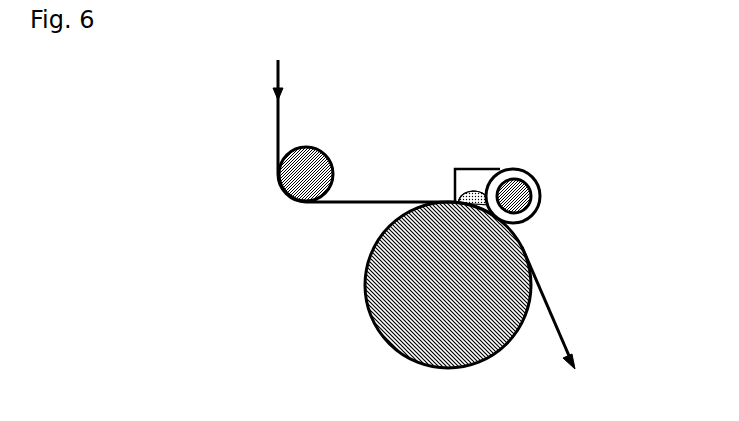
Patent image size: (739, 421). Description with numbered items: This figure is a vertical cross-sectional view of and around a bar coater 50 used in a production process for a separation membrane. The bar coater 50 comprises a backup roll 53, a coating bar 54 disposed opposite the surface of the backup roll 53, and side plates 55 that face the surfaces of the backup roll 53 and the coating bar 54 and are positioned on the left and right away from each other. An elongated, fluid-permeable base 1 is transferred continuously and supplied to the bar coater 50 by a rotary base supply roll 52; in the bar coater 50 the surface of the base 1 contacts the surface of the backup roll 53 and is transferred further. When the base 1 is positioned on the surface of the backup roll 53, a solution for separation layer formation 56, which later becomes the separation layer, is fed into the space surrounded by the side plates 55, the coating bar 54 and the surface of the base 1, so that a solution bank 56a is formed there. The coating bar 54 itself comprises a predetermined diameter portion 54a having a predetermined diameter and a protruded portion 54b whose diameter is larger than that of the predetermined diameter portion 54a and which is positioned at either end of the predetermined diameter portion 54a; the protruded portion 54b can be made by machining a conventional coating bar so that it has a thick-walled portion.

The base 1 is at (277, 127).
The bar coater 50 is at (533, 145).
The base supply roll 52 is at (308, 147).
The backup roll 53 is at (365, 282).
The coating bar 54 is at (573, 218).
The predetermined diameter portion 54a is at (520, 212).
The protruded portion 54b is at (532, 213).
The side plates 55 is at (463, 168).
The solution for separation layer formation 56 is at (477, 192).
The solution bank 56a is at (453, 193).